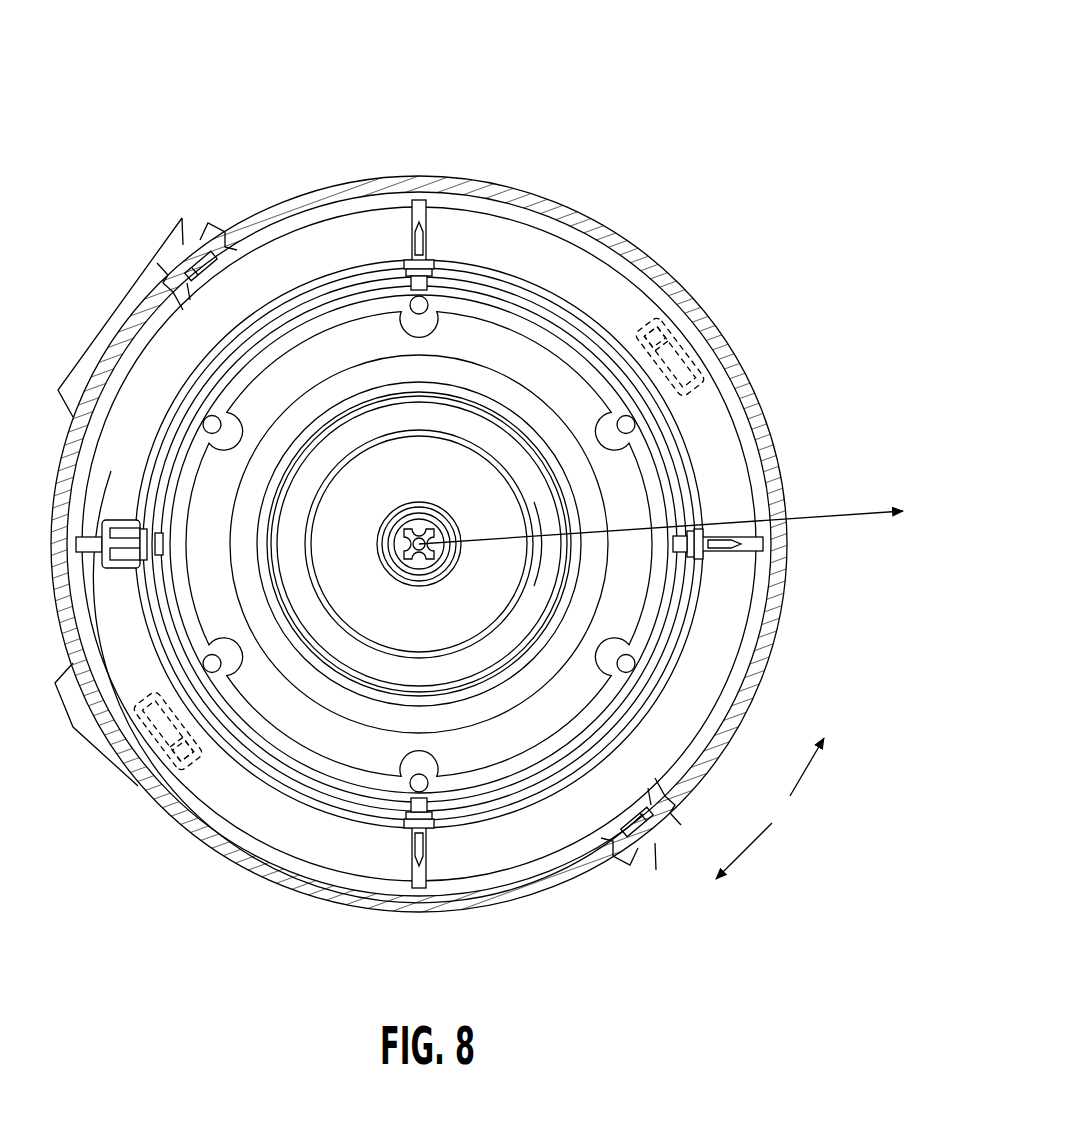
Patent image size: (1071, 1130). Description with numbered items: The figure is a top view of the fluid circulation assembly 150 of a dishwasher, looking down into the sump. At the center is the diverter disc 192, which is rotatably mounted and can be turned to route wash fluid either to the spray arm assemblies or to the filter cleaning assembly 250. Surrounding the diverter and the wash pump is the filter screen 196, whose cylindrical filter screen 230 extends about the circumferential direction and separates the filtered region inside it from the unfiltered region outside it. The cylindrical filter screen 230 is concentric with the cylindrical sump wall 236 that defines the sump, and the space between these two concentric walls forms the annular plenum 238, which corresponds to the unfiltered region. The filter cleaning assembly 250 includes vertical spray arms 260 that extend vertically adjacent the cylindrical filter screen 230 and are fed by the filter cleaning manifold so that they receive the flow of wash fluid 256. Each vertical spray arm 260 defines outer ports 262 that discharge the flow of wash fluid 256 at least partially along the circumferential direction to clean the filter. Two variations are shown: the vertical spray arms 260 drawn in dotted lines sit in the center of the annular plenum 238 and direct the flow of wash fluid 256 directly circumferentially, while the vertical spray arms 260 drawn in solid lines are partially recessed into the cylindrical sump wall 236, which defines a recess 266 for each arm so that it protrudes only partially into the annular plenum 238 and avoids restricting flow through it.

The fluid circulation assembly 150 is at (777, 96).
The diverter disc 192 is at (456, 468).
The filter screen 196 is at (326, 820).
The cylindrical filter screen 230 is at (700, 648).
The cylindrical sump wall 236 is at (784, 462).
The annular plenum 238 is at (494, 862).
The filter cleaning assembly 250 is at (735, 357).
The flow of wash fluid 256 is at (164, 398).
The vertical spray arm 260 is at (196, 280).
The outer port 262 is at (192, 290).
The recess 266 is at (227, 224).